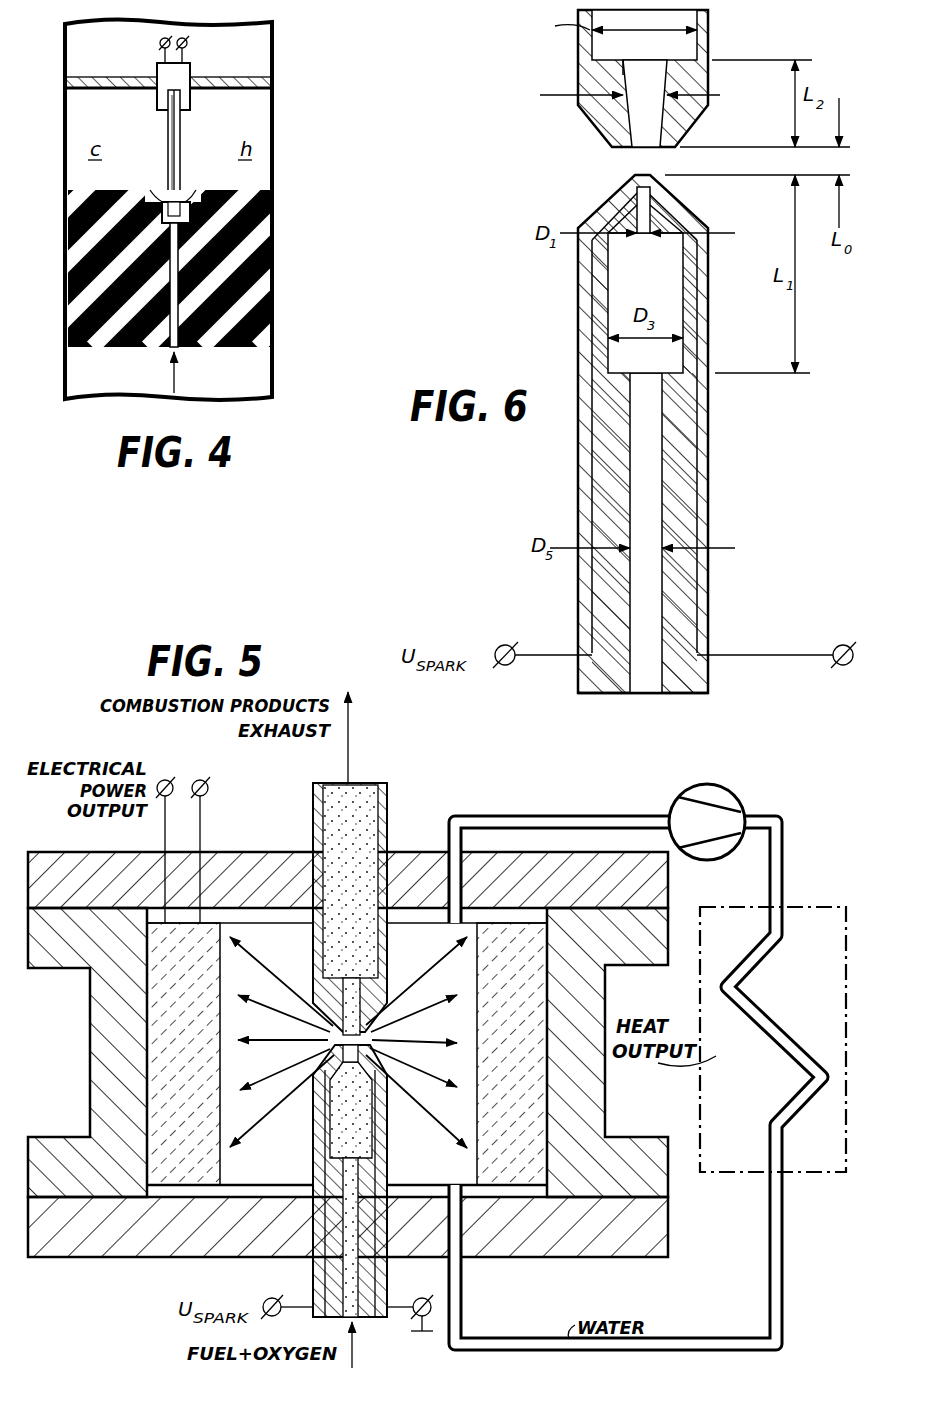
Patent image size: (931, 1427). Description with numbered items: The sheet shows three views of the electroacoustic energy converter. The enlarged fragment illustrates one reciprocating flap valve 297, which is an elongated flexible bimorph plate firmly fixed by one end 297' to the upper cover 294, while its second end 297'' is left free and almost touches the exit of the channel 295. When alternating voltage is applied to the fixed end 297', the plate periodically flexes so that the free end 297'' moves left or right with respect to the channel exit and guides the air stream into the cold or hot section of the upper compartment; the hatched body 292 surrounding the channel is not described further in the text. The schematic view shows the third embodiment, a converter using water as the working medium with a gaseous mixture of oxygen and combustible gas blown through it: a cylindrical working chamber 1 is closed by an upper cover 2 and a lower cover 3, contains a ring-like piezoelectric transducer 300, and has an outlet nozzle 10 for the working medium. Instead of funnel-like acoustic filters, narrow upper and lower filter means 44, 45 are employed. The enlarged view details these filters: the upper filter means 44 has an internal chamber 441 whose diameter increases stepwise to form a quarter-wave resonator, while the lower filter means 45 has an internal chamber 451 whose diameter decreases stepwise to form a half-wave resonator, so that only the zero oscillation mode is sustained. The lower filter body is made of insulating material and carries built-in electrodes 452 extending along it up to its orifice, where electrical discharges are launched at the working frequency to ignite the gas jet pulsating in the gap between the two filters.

In FIG. 5, the cylindrical working chamber 1 is at (107, 992).
In FIG. 5, the upper cover 2 is at (266, 850).
In FIG. 5, the lower cover 3 is at (76, 1233).
In FIG. 5, the outlet nozzle 10 is at (740, 806).
In FIG. 6, the upper filter means 44 is at (690, 120).
In FIG. 5, the upper filter means 44 is at (387, 802).
In FIG. 6, the lower filter means 45 is at (683, 588).
In FIG. 5, the lower filter means 45 is at (326, 1270).
In FIG. 5, the ring-like piezoelectric transducer 300 is at (166, 1048).
In FIG. 6, the internal chamber of upper filter means 441 is at (624, 72).
In FIG. 6, the internal chamber of lower filter means 451 is at (612, 284).
In FIG. 6, the built-in electrodes 452 is at (593, 483).
In FIG. 4, the insulating layer 292 is at (86, 303).
In FIG. 4, the upper cover 294 is at (88, 76).
In FIG. 4, the channel 295 is at (178, 308).
In FIG. 4, the valve 297 is at (165, 115).
In FIG. 4, the fixed end of valve plate 297' is at (212, 149).
In FIG. 4, the free end of valve plate 297'' is at (159, 190).